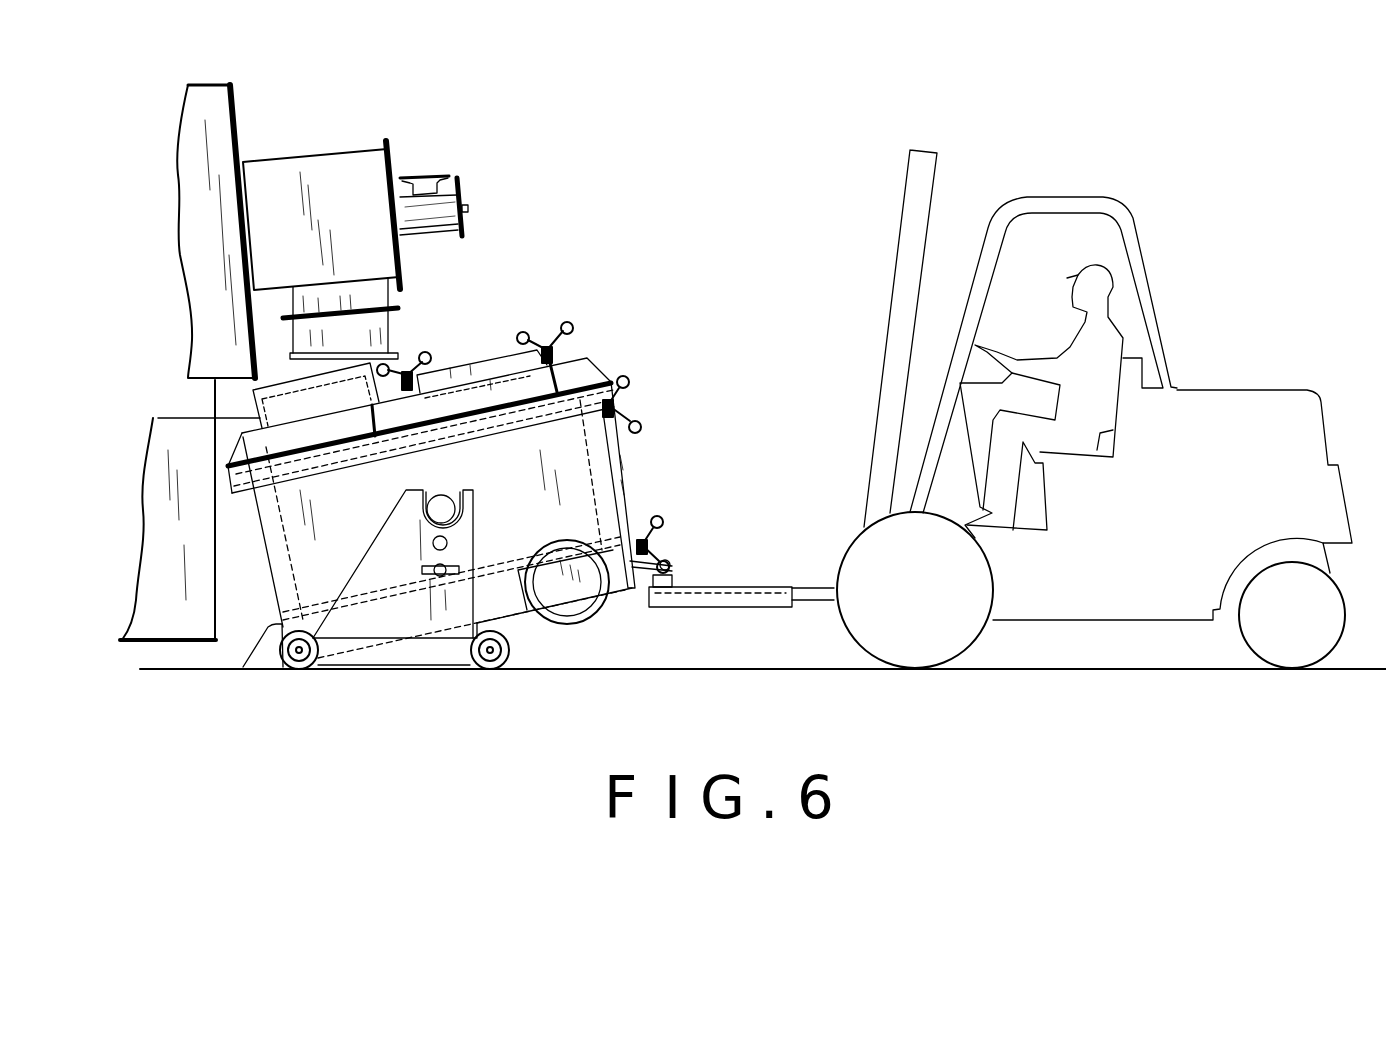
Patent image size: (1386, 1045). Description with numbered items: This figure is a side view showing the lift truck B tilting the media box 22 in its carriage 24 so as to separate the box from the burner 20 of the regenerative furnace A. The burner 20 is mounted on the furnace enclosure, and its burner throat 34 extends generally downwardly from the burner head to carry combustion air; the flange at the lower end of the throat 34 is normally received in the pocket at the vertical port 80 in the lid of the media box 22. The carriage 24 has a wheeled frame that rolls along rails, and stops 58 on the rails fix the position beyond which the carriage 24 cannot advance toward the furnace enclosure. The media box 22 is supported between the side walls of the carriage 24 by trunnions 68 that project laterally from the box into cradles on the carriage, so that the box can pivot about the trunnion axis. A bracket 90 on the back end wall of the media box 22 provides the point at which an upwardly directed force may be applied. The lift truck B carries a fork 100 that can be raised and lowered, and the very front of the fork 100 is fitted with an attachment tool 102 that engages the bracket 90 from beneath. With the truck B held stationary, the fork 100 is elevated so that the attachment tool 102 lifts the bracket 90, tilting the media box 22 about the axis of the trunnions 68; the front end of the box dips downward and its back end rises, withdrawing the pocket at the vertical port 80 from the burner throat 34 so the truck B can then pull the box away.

The burner 20 is at (346, 146).
The media box 22 is at (634, 445).
The carriage 24 is at (344, 571).
The burner throat 34 is at (390, 329).
The stops 58 is at (258, 637).
The trunnions 68 is at (443, 508).
The vertical port 80 is at (160, 418).
The bracket 90 is at (672, 568).
The fork 100 is at (820, 600).
The attachment tool 102 is at (720, 598).
The regenerative furnace A is at (452, 150).
The lift truck B is at (1199, 364).